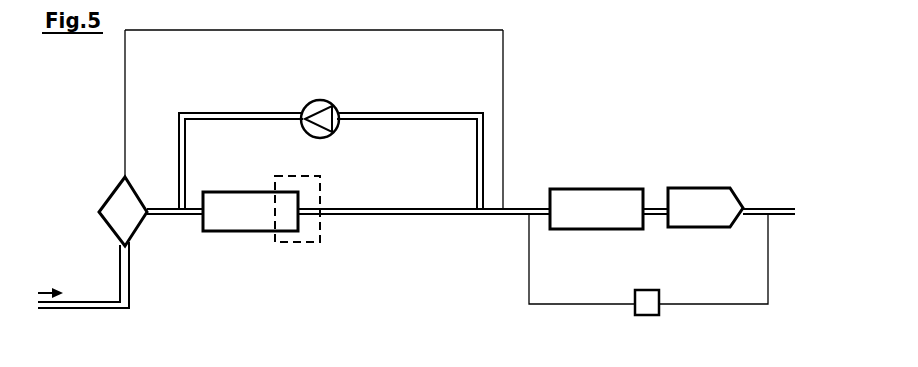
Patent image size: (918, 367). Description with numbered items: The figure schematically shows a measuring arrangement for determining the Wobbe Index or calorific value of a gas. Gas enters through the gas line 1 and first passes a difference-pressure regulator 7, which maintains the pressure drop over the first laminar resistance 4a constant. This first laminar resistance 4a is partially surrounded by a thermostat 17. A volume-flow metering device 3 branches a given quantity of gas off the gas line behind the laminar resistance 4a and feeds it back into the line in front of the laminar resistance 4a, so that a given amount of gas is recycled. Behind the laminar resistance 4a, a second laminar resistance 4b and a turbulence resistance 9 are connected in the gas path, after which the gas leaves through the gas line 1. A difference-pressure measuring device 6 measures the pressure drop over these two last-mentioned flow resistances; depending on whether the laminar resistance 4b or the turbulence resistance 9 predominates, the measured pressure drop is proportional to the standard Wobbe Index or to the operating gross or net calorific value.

The gas line 1 is at (50, 311).
The volume-flow metering device 3 is at (336, 105).
The laminar resistance 4a is at (251, 233).
The laminar resistance 4b is at (603, 188).
The difference-pressure measuring device 6 is at (428, 350).
The difference-pressure regulator 7 is at (113, 190).
The turbulence resistance 9 is at (718, 268).
The thermostat 17 is at (319, 229).